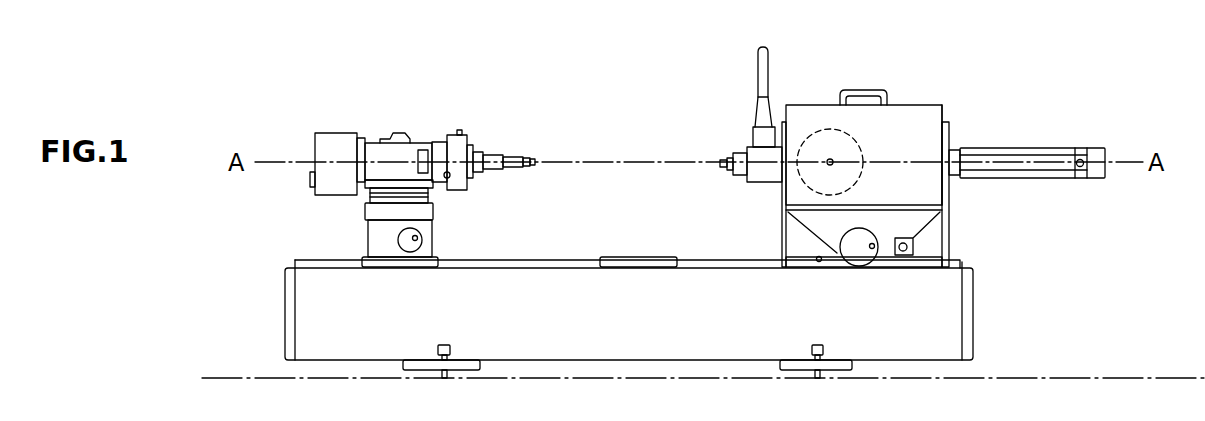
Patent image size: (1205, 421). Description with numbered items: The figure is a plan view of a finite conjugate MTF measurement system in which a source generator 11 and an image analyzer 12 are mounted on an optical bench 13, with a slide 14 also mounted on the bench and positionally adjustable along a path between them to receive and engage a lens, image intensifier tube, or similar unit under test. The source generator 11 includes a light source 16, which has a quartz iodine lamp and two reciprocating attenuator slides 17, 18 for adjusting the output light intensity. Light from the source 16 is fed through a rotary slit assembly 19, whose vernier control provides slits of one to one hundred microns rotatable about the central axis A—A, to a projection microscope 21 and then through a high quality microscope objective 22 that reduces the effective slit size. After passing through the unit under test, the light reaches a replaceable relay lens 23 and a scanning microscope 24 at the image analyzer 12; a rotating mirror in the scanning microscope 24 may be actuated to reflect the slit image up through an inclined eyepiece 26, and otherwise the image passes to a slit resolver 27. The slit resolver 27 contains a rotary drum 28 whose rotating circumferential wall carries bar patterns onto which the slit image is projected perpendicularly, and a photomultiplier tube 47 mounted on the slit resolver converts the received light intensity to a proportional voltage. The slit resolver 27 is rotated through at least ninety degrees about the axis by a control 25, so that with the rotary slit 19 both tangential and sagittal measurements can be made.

The source generator 11 is at (394, 101).
The image analyzer 12 is at (877, 62).
The optical bench 13 is at (923, 353).
The slide 14 is at (645, 257).
The light source 16 is at (330, 133).
The attenuator slide 17 is at (363, 142).
The attenuator slide 18 is at (437, 142).
The rotary slit assembly 19 is at (468, 138).
The projection microscope 21 is at (523, 157).
The microscope objective 22 is at (538, 168).
The relay lens 23 is at (722, 160).
The scanning microscope 24 is at (758, 186).
The control 25 is at (865, 257).
The inclined eyepiece 26 is at (767, 63).
The slit resolver 27 is at (940, 105).
The rotary drum 28 is at (860, 140).
The photomultiplier tube 47 is at (1093, 180).